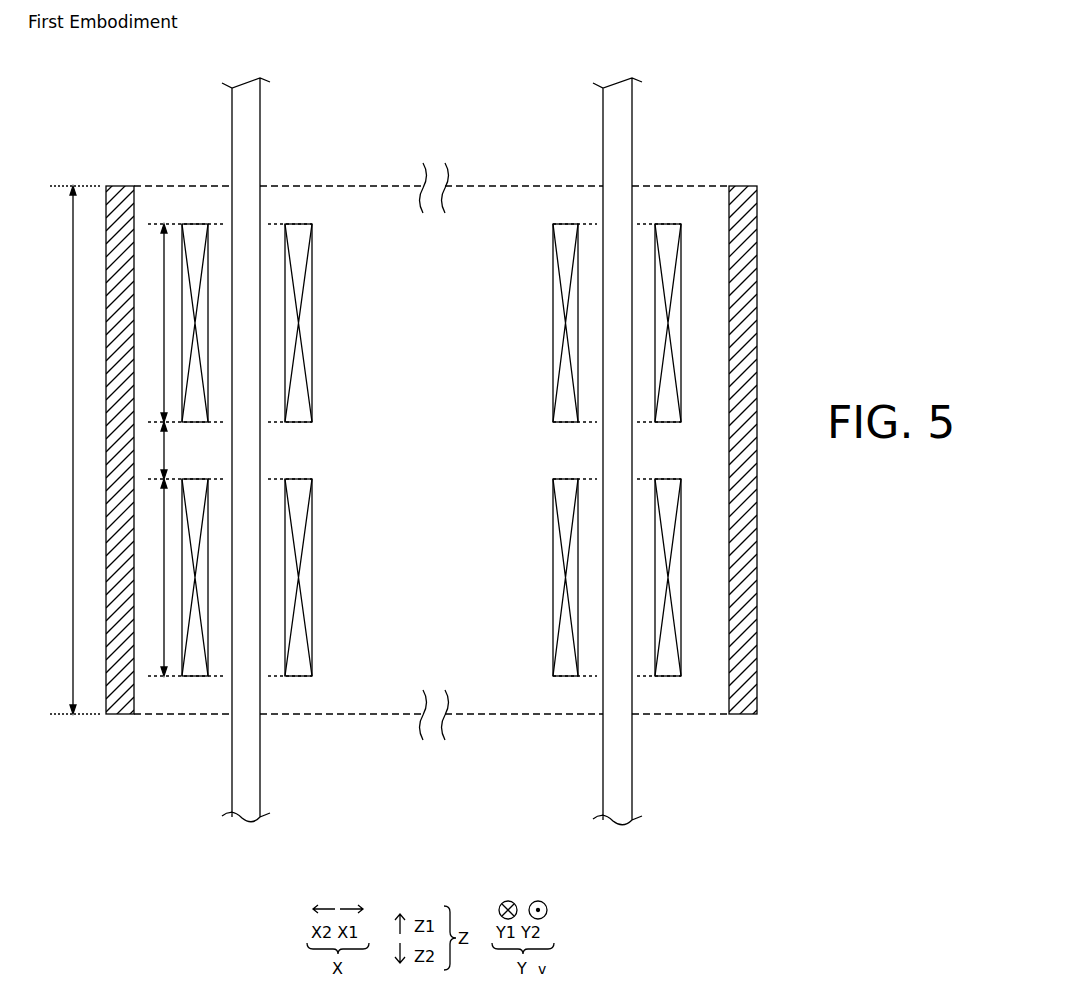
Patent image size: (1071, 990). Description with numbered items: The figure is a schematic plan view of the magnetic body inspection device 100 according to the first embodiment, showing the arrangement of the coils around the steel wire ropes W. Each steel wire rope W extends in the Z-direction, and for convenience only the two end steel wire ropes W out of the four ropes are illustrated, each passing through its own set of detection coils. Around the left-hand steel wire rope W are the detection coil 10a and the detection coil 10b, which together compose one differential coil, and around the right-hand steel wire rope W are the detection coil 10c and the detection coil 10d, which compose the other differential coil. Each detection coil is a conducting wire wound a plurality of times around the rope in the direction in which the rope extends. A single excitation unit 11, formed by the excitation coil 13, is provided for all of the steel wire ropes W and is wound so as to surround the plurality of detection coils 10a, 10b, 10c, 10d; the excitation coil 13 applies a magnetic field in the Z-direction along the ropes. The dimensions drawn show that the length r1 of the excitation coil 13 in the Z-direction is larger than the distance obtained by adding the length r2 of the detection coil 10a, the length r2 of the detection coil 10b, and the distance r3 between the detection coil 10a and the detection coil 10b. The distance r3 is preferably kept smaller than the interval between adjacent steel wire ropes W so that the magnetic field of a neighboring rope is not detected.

The magnetic body inspection device 100 is at (767, 149).
The excitation unit 11 is at (116, 728).
The excitation coil 13 is at (743, 451).
The detection coil 10a is at (325, 357).
The detection coil 10b is at (325, 547).
The detection coil 10c is at (528, 280).
The detection coil 10d is at (528, 600).
The steel wire rope W is at (262, 793).
The length of the excitation coil in the Z-direction r1 is at (70, 450).
The length of the detection coil in the Z-direction r2 is at (155, 450).
The distance between the detection coils r3 is at (155, 450).